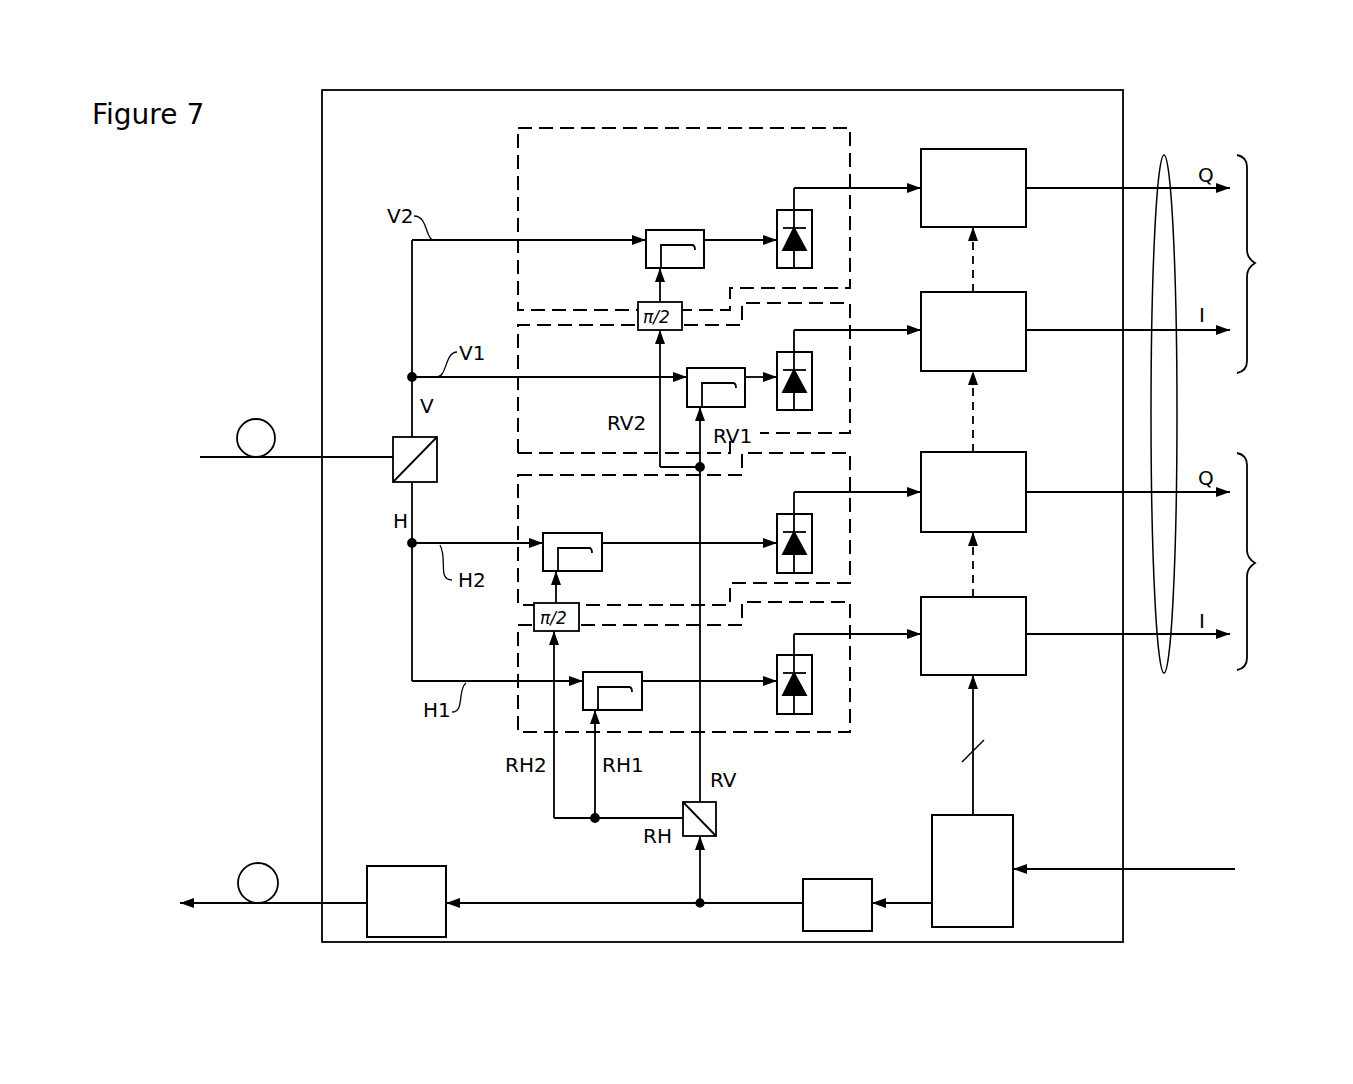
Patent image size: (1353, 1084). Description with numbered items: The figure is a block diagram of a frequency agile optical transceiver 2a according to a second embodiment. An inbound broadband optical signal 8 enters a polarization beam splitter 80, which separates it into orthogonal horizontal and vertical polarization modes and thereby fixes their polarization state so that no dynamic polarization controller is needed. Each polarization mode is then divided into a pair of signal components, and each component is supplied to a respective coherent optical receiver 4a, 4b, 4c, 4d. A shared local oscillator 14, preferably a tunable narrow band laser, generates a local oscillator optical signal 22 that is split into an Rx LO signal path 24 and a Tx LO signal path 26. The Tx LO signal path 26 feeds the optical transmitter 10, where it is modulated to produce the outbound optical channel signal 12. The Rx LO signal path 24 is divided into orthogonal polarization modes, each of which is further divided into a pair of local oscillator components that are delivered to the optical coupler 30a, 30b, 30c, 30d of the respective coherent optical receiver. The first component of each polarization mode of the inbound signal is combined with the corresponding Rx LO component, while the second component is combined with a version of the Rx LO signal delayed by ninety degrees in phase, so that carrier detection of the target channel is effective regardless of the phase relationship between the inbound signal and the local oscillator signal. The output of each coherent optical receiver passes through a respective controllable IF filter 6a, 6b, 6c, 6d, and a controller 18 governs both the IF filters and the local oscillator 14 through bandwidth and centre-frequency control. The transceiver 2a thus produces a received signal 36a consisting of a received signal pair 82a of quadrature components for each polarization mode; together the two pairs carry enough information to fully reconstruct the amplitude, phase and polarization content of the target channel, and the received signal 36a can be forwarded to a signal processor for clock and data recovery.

The frequency agile transceiver 2a is at (290, 225).
The coherent optical receiver 4a is at (518, 192).
The coherent optical receiver 4b is at (518, 421).
The coherent optical receiver 4c is at (518, 516).
The coherent optical receiver 4d is at (518, 657).
The controllable IF filter 6a is at (1010, 149).
The controllable IF filter 6b is at (1012, 292).
The controllable IF filter 6c is at (1012, 452).
The controllable IF filter 6d is at (1012, 597).
The inbound broadband optical signal 8 is at (286, 458).
The optical transmitter 10 is at (389, 866).
The outbound optical channel signal 12 is at (292, 905).
The local oscillator 14 is at (849, 879).
The controller 18 is at (1001, 815).
The local oscillator optical signal 22 is at (778, 906).
The Rx LO signal path 24 is at (702, 882).
The Tx LO signal path 26 is at (590, 903).
The optical coupler 30a is at (671, 230).
The optical coupler 30b is at (702, 368).
The optical coupler 30c is at (576, 533).
The optical coupler 30d is at (613, 672).
The received signal 36a is at (1164, 160).
The polarization beam splitter 80 is at (393, 443).
The received signal pair 82a is at (1271, 412).